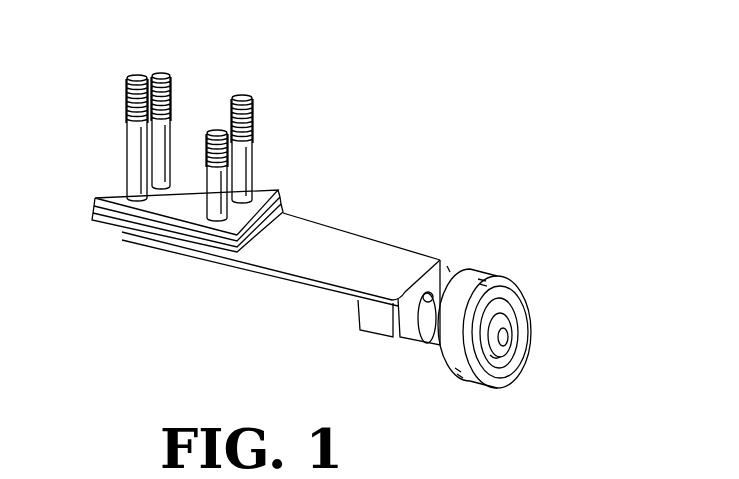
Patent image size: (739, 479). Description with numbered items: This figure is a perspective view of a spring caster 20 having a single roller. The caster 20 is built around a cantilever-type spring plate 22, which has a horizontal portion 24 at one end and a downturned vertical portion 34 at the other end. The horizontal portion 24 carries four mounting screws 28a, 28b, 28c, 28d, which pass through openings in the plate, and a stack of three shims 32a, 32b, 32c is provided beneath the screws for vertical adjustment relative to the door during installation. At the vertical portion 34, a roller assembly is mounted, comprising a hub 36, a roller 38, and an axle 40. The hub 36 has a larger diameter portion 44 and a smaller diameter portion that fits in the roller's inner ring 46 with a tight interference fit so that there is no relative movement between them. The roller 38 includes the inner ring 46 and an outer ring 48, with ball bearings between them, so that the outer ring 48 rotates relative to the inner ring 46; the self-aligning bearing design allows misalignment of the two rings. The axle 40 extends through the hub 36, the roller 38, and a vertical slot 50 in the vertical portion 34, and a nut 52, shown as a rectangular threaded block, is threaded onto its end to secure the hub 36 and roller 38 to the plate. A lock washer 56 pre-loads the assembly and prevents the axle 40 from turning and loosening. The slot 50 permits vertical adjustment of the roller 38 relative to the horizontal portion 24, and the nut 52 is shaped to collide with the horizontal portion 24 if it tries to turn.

The spring caster 20 is at (399, 96).
The spring plate 22 is at (281, 256).
The horizontal portion 24 is at (297, 230).
The mounting screw 28a is at (170, 82).
The mounting screw 28b is at (124, 80).
The mounting screw 28c is at (254, 100).
The mounting screw 28d is at (204, 130).
The shim 32a is at (112, 193).
The shim 32b is at (282, 202).
The shim 32c is at (256, 240).
The vertical portion 34 is at (453, 277).
The hub 36 is at (386, 322).
The roller 38 is at (487, 308).
The axle 40 is at (508, 322).
The larger diameter portion 44 is at (395, 276).
The inner ring 46 is at (492, 354).
The outer ring 48 is at (522, 308).
The vertical slot 50 is at (447, 268).
The nut 52 is at (367, 316).
The lock washer 56 is at (483, 338).